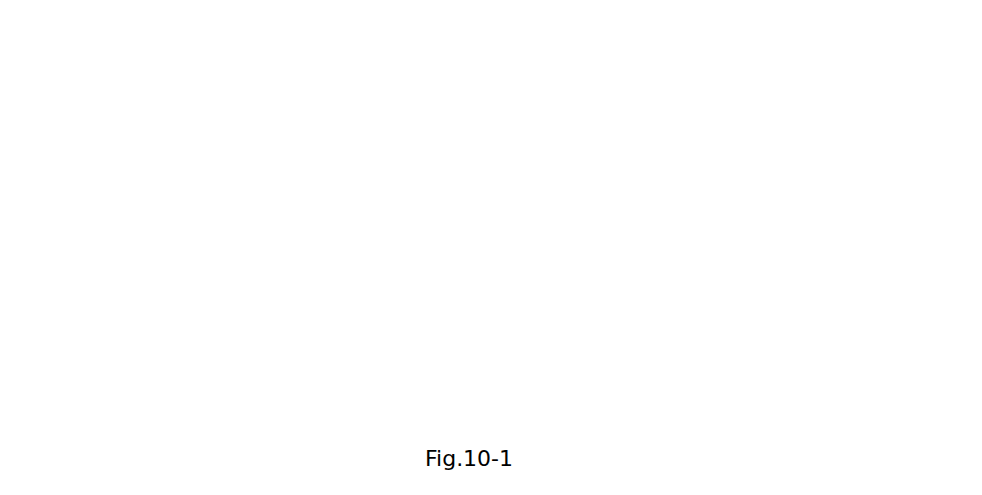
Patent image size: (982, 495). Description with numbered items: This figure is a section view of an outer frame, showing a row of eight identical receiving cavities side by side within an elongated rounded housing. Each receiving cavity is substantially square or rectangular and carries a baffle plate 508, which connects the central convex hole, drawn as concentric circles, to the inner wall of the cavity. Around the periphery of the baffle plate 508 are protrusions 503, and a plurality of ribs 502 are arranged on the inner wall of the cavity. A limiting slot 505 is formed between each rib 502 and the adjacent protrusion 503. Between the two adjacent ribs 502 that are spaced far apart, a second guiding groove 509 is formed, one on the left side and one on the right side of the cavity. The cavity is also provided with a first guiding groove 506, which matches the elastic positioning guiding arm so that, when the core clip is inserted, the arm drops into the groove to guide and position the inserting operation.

The rib 502 is at (278, 192).
The protrusion 503 is at (90, 227).
The limiting slot 505 is at (92, 122).
The first guiding groove 506 is at (307, 60).
The baffle plate 508 is at (351, 314).
The second guiding groove 509 is at (374, 270).